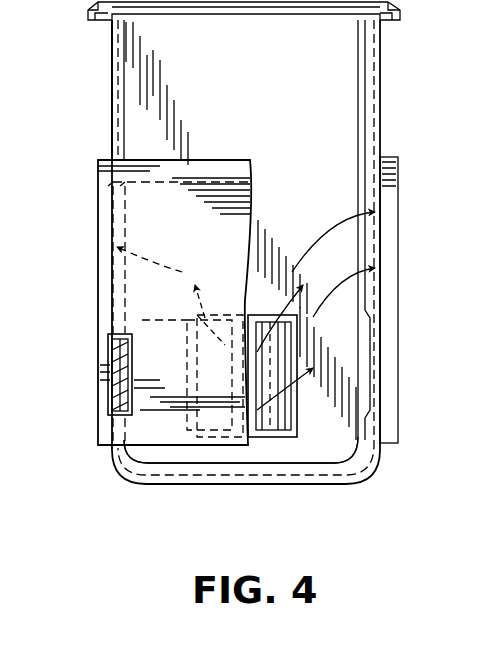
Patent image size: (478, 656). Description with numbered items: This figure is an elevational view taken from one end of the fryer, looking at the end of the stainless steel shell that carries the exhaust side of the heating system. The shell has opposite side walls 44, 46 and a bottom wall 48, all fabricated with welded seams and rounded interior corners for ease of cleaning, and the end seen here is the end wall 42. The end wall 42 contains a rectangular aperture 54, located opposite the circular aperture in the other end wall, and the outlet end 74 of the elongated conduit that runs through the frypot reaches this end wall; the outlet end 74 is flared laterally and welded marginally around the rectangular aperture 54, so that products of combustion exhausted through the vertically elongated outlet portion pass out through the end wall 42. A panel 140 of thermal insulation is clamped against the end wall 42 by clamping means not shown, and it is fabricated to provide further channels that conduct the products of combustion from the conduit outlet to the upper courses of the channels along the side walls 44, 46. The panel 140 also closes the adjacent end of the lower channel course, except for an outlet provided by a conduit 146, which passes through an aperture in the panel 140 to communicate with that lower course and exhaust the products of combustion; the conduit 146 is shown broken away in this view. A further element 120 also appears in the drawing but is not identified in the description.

The end wall 42 is at (143, 117).
The side wall 44 is at (112, 76).
The side wall 46 is at (381, 90).
The bottom wall 48 is at (230, 487).
The rectangular aperture 54 is at (290, 352).
The outlet end 74 is at (290, 430).
The support bracket 120 is at (395, 192).
The panel of thermal insulation 140 is at (213, 165).
The conduit 146 is at (108, 393).